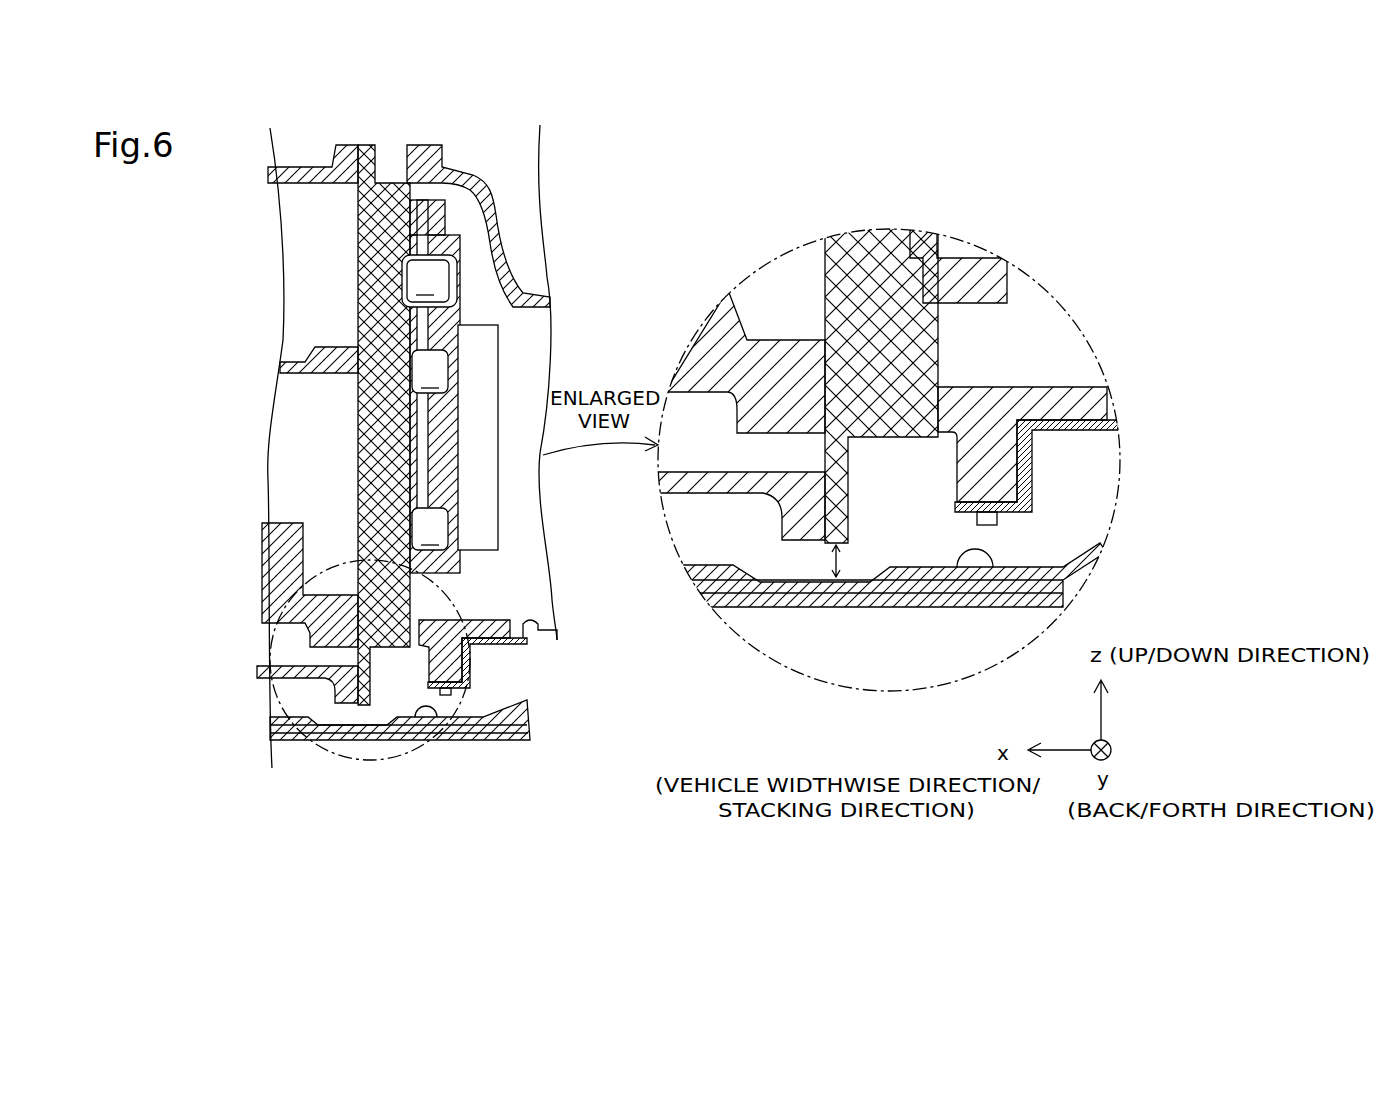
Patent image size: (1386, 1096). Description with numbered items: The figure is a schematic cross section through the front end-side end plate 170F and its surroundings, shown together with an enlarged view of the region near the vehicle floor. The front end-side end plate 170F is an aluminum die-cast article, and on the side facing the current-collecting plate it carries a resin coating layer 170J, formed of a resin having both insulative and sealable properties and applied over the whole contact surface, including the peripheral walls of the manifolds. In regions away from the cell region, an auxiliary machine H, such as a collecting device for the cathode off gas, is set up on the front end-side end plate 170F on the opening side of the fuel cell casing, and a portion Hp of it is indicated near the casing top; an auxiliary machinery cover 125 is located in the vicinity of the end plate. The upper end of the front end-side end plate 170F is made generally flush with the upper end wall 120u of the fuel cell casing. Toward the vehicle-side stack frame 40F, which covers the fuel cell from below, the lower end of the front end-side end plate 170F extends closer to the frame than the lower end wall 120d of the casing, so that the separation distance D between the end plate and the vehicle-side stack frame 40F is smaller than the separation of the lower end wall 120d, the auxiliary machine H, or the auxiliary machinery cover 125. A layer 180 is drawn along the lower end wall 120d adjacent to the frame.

The upper end wall 120u is at (466, 172).
The housing protrusion Hp is at (447, 232).
The resin coating layer 170J is at (486, 345).
The auxiliary machine H is at (487, 383).
The front end-side end plate 170F is at (375, 495).
The auxiliary machinery cover 125 is at (285, 662).
The insulating liner 180 is at (520, 640).
The lower end wall 120d is at (470, 660).
The vehicle-side stack frame 40F is at (478, 735).
The separation distance D is at (838, 565).